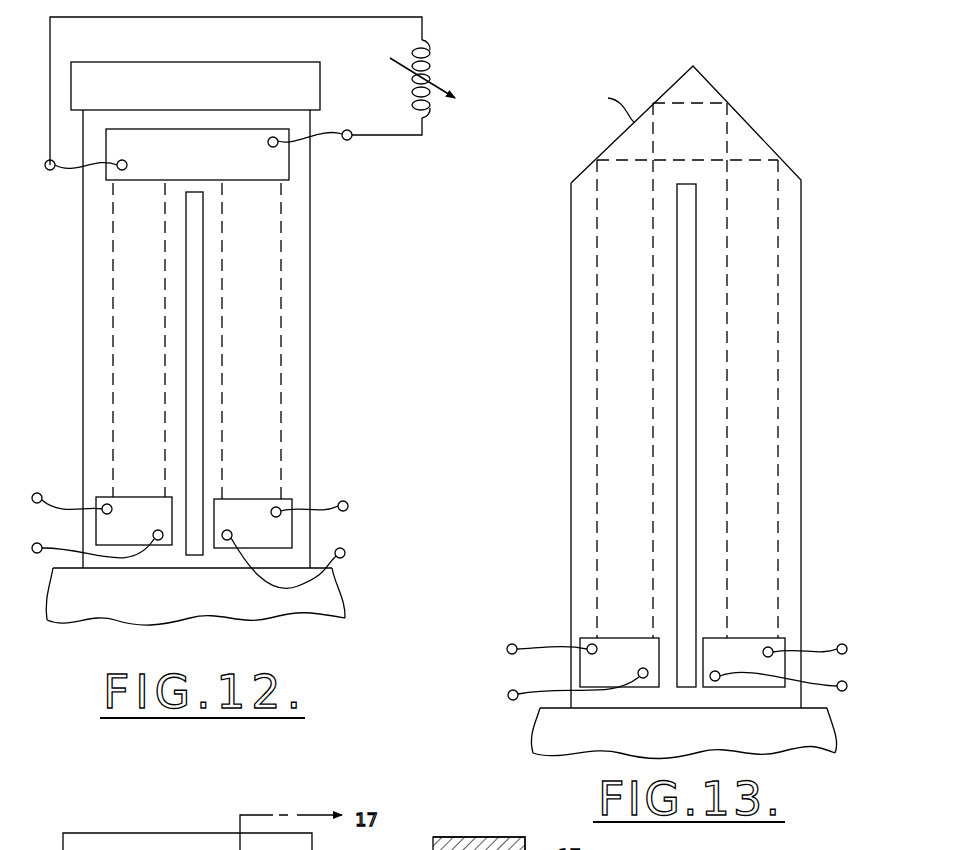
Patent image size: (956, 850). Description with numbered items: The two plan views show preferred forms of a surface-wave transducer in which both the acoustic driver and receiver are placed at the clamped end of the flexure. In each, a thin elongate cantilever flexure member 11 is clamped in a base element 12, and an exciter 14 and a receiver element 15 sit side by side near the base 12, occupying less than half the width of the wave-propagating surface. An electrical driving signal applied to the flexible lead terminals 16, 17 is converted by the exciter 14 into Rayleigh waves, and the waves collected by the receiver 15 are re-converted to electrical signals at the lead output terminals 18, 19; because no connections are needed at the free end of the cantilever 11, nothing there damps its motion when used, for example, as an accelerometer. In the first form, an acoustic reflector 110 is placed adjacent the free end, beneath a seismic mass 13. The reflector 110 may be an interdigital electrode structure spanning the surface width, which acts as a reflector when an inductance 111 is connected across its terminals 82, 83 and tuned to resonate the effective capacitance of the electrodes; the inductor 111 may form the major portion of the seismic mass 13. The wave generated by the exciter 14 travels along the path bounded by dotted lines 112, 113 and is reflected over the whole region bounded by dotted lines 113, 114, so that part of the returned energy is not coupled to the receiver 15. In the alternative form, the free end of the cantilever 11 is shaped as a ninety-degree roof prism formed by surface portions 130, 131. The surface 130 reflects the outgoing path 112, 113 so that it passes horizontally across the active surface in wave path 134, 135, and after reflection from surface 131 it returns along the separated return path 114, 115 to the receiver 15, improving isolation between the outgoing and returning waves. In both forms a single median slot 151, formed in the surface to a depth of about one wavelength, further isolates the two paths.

In FIG. 12, the cantilever flexure member 11 is at (310, 281).
In FIG. 13, the cantilever flexure member 11 is at (802, 236).
In FIG. 12, the base element 12 is at (333, 595).
In FIG. 13, the base element 12 is at (830, 738).
In FIG. 12, the seismic mass 13 is at (320, 75).
In FIG. 12, the exciter 14 is at (133, 497).
In FIG. 13, the exciter 14 is at (620, 638).
In FIG. 12, the receiver element 15 is at (245, 499).
In FIG. 13, the receiver element 15 is at (740, 638).
In FIG. 12, the lead terminal 16 is at (36, 553).
In FIG. 13, the lead terminal 16 is at (512, 700).
In FIG. 12, the lead terminal 17 is at (37, 493).
In FIG. 13, the lead terminal 17 is at (512, 644).
In FIG. 12, the lead output terminal 18 is at (344, 501).
In FIG. 13, the lead output terminal 18 is at (843, 644).
In FIG. 12, the lead output terminal 19 is at (343, 549).
In FIG. 13, the lead output terminal 19 is at (846, 683).
In FIG. 12, the reflector terminal 82 is at (126, 162).
In FIG. 12, the reflector terminal 83 is at (268, 143).
In FIG. 12, the acoustic reflector 110 is at (275, 160).
In FIG. 12, the inductance 111 is at (434, 62).
In FIG. 12, the dotted line 112 is at (165, 288).
In FIG. 13, the dotted line 112 is at (653, 300).
In FIG. 12, the dotted line 113 is at (110, 310).
In FIG. 13, the dotted line 113 is at (596, 375).
In FIG. 12, the dotted line 114 is at (281, 372).
In FIG. 13, the dotted line 114 is at (778, 356).
In FIG. 13, the dotted line 115 is at (727, 442).
In FIG. 13, the reflecting surface portion 130 is at (601, 102).
In FIG. 13, the reflecting surface portion 131 is at (752, 125).
In FIG. 13, the wave path line 134 is at (710, 101).
In FIG. 13, the wave path line 135 is at (770, 158).
In FIG. 12, the median slot 151 is at (194, 252).
In FIG. 13, the median slot 151 is at (680, 437).